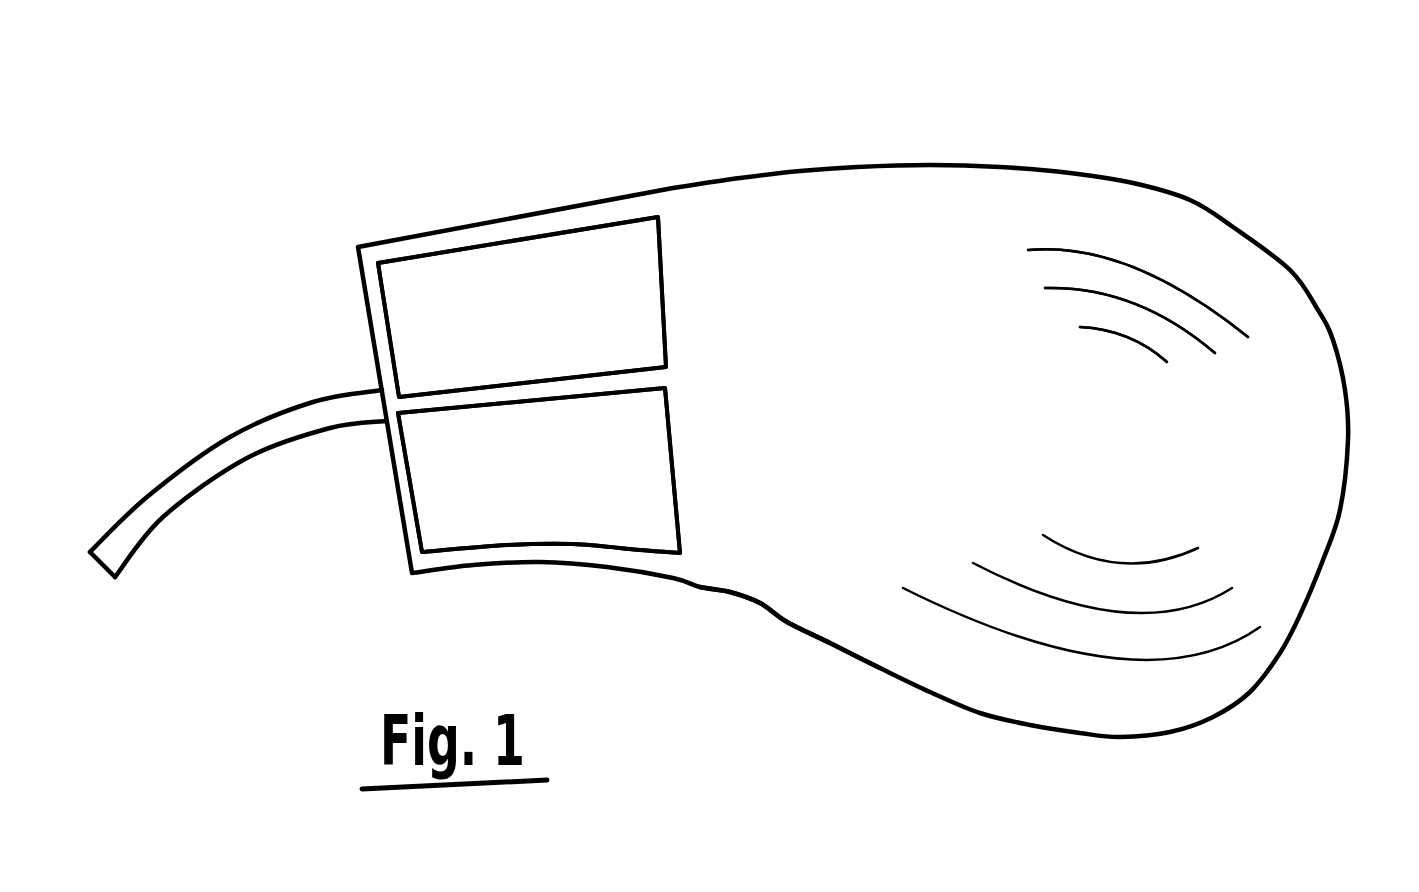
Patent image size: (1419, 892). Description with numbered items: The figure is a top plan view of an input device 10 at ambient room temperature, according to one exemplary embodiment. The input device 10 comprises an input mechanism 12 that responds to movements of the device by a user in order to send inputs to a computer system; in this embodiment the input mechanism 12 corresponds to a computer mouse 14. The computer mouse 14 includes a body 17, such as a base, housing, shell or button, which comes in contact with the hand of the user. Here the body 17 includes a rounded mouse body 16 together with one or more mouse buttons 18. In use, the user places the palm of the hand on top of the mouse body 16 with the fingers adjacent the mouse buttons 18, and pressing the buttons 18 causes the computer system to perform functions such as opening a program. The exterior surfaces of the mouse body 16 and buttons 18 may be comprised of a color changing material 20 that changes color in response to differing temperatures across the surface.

The input device 10 is at (1178, 135).
The input mechanism 12 is at (857, 140).
The computer mouse 14 is at (730, 223).
The mouse body 16 is at (1023, 457).
The body 17 is at (787, 652).
The mouse buttons 18 is at (575, 317).
The color changing material 20 is at (1232, 405).